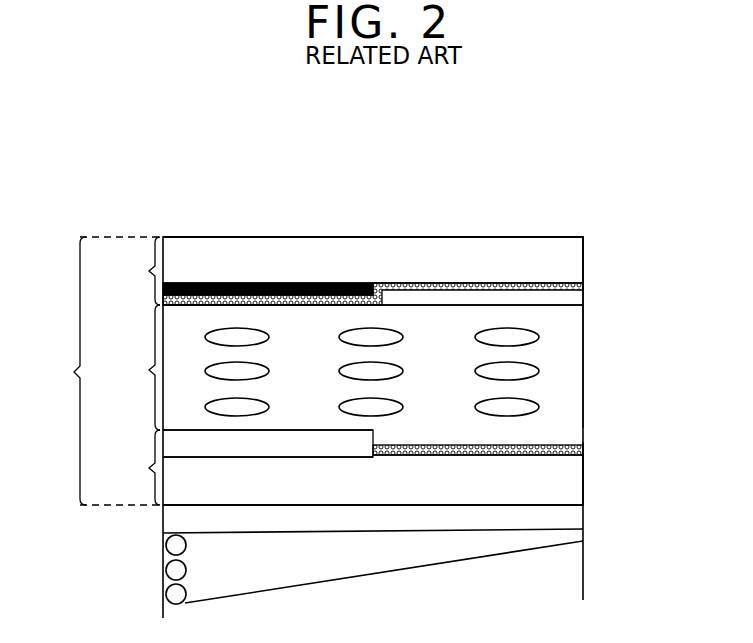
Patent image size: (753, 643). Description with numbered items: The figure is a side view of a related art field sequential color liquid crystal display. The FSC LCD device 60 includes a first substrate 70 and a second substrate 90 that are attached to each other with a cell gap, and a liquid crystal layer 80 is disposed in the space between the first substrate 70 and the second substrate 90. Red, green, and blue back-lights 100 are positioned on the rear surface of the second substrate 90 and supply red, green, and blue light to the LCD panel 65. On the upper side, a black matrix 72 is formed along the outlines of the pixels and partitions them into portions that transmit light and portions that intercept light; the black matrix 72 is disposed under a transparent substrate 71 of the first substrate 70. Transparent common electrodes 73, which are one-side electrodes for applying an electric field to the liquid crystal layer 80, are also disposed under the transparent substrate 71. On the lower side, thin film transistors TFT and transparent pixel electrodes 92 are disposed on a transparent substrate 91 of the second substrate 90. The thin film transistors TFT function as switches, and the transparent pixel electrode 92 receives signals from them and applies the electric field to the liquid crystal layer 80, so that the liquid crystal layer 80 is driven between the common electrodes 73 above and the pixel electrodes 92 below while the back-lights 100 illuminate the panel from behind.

The FSC LCD device 60 is at (405, 237).
The LCD panel 65 is at (107, 371).
The first substrate 70 is at (351, 271).
The transparent substrate 71 is at (577, 253).
The black matrix 72 is at (257, 283).
The transparent common electrodes 73 is at (579, 287).
The liquid crystal layer 80 is at (350, 367).
The second substrate 90 is at (350, 467).
The transparent substrate 91 is at (583, 482).
The transparent pixel electrodes 92 is at (583, 451).
The back-lights 100 is at (402, 562).
The thin film transistors TFT is at (247, 445).